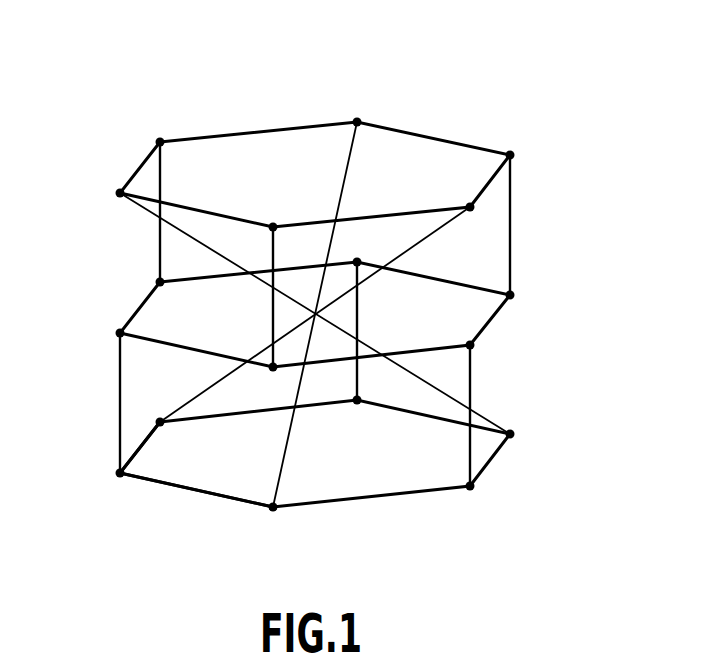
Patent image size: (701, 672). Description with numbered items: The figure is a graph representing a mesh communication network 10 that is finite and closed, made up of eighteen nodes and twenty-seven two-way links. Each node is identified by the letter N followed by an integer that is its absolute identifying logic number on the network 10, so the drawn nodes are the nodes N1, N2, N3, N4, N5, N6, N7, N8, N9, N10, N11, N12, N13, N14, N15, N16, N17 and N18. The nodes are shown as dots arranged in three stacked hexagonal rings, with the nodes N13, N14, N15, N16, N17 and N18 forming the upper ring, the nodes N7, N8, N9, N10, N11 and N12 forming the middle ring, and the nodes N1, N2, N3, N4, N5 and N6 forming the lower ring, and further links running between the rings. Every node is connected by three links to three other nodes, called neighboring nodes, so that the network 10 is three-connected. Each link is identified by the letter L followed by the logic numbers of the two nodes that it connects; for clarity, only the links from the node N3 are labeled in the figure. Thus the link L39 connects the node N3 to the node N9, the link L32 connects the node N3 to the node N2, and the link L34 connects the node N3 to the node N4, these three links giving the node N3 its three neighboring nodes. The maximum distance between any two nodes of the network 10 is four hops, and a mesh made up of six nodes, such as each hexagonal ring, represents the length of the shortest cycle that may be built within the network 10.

The mesh communication network 10 is at (440, 102).
The node N1 is at (362, 420).
The node N2 is at (151, 400).
The node N3 is at (107, 488).
The node N4 is at (273, 526).
The node N5 is at (470, 503).
The node N6 is at (527, 438).
The node N7 is at (374, 244).
The node N8 is at (177, 297).
The node N9 is at (101, 326).
The node N10 is at (268, 382).
The node N11 is at (494, 354).
The node N12 is at (534, 298).
The node N13 is at (359, 102).
The node N14 is at (157, 121).
The node N15 is at (97, 179).
The node N16 is at (280, 210).
The node N17 is at (465, 186).
The node N18 is at (532, 142).
The link L39 is at (120, 383).
The link L32 is at (143, 447).
The link L34 is at (193, 490).